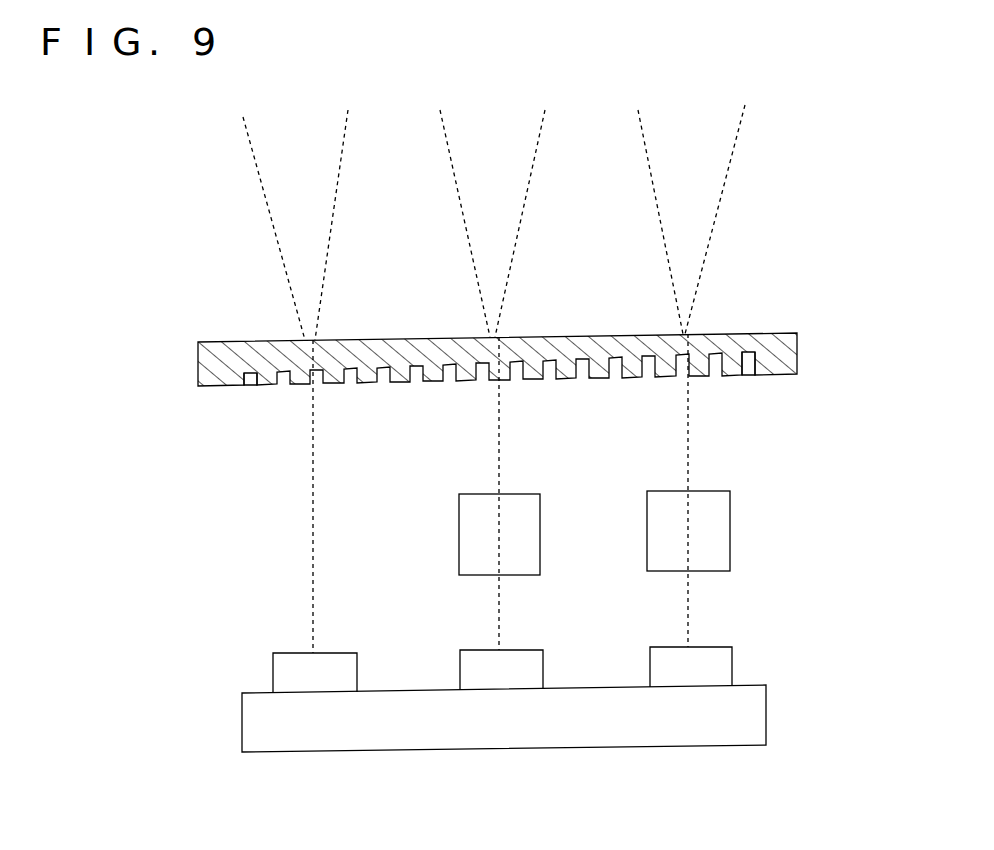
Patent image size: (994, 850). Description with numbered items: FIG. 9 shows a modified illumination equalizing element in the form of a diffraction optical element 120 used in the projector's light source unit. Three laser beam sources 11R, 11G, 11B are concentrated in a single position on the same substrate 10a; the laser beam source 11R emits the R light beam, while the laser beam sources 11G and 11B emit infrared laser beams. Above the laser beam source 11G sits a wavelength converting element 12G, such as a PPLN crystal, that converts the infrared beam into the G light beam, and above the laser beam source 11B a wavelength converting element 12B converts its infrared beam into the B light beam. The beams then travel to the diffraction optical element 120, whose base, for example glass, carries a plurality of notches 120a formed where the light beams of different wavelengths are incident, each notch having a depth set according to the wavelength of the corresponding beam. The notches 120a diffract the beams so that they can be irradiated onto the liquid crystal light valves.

The diffraction optical element 120 is at (797, 351).
The notches 120a is at (500, 417).
The wavelength converting element 12G is at (459, 523).
The wavelength converting element 12B is at (730, 517).
The laser beam source 11R is at (278, 672).
The laser beam source 11G is at (461, 677).
The laser beam source 11B is at (722, 665).
The substrate 10a is at (755, 727).